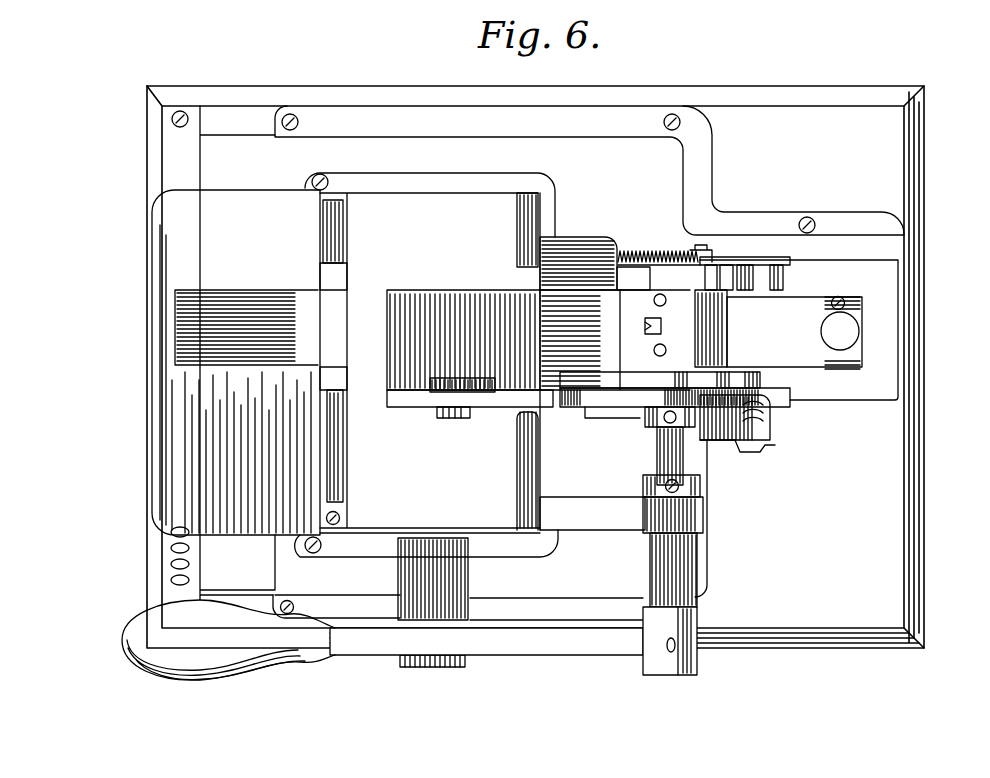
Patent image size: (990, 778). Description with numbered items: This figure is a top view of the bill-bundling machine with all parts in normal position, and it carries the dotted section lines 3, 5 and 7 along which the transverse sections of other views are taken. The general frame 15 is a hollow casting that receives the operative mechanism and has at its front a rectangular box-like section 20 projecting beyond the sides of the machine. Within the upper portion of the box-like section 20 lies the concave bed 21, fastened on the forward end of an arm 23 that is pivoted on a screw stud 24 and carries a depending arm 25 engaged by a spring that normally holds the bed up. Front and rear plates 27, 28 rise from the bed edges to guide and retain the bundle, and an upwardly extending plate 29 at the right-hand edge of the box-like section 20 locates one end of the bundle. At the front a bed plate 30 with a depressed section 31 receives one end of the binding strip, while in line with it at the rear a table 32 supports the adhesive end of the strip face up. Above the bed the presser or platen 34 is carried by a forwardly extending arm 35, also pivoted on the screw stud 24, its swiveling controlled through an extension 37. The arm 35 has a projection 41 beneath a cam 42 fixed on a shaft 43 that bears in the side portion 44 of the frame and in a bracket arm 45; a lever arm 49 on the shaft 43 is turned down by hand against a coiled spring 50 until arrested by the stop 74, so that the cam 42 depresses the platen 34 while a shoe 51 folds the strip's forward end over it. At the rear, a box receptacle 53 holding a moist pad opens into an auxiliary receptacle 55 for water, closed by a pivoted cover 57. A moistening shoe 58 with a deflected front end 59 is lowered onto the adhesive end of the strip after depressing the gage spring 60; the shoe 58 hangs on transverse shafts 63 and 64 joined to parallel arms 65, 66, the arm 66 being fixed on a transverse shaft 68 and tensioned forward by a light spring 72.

The section line 3- 3 is at (985, 325).
The section line 5- 5 is at (446, 752).
The section line 7- 7 is at (725, 519).
The general frame 15 is at (712, 192).
The box-like section 20 is at (560, 545).
The bed 21 is at (430, 361).
The arm 23 is at (612, 398).
The screw stud 24 is at (742, 460).
The depending arm 25 is at (223, 353).
The front plate 27 is at (347, 250).
The rear plate 28 is at (517, 238).
The upwardly extending plate 29 is at (442, 526).
The bed plate 30 is at (236, 362).
The depressed section 31 is at (251, 327).
The table 32 is at (615, 313).
The presser or platen 34 is at (463, 340).
The forwardly extending arm 35 is at (495, 405).
The extension 37 is at (428, 388).
The projection or cam surface 41 is at (556, 408).
The cam 42 is at (622, 440).
The shaft 43 is at (658, 460).
The side portion 44 is at (660, 381).
The bracket arm 45 is at (592, 513).
The lever arm 49 is at (612, 650).
The coiled spring 50 is at (650, 562).
The shoe 51 is at (340, 377).
The box receptacle 53 is at (794, 333).
The auxiliary receptacle 55 is at (847, 366).
The pivoted cover 57 is at (855, 331).
The moistening shoe 58 is at (713, 307).
The deflected front end 59 is at (700, 340).
The spring 60 is at (643, 328).
The transverse shaft 63 is at (790, 272).
The transverse shaft 64 is at (745, 262).
The arm 65 is at (776, 262).
The arm 66 is at (730, 260).
The transverse shaft 68 is at (703, 248).
The light spring 72 is at (640, 252).
The stop 74 is at (470, 582).